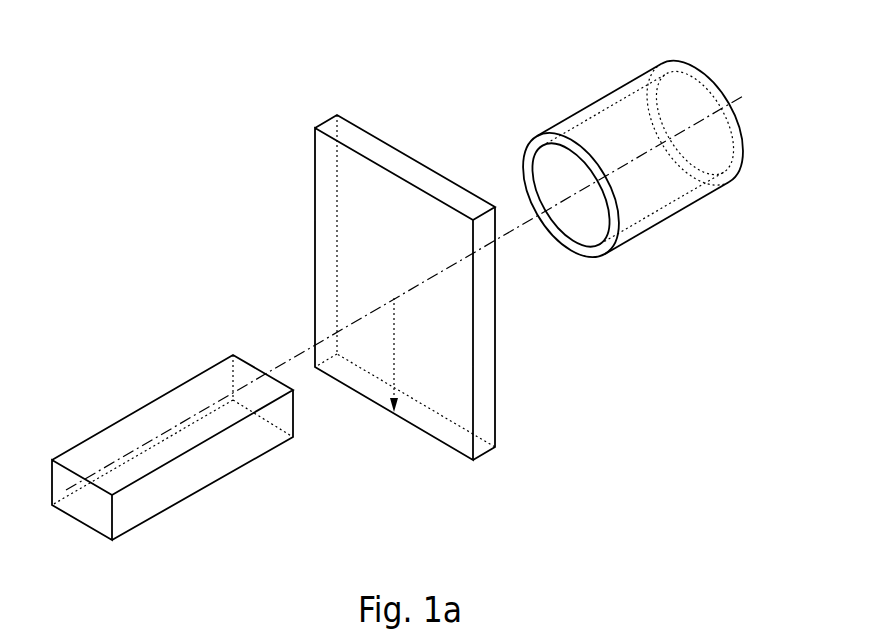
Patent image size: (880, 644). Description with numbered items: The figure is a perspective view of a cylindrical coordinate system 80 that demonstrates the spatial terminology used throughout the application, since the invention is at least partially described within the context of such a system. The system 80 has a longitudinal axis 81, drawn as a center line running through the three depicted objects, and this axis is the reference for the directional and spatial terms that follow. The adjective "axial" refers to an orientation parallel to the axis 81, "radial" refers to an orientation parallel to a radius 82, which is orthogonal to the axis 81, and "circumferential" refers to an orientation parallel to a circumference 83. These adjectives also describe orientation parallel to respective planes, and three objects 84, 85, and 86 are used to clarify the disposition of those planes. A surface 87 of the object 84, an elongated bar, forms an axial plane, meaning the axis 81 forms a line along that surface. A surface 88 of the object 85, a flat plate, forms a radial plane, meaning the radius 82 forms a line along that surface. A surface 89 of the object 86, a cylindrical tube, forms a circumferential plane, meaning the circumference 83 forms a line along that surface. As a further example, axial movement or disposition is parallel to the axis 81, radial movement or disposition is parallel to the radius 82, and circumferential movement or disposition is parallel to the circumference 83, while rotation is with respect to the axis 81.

The cylindrical coordinate system 80 is at (268, 163).
The longitudinal axis 81 is at (597, 146).
The radius 82 is at (394, 350).
The circumference 83 is at (522, 157).
The object 84 is at (137, 527).
The object 85 is at (505, 450).
The object 86 is at (656, 228).
The surface 87 is at (133, 430).
The surface 88 is at (330, 247).
The surface 89 is at (600, 100).